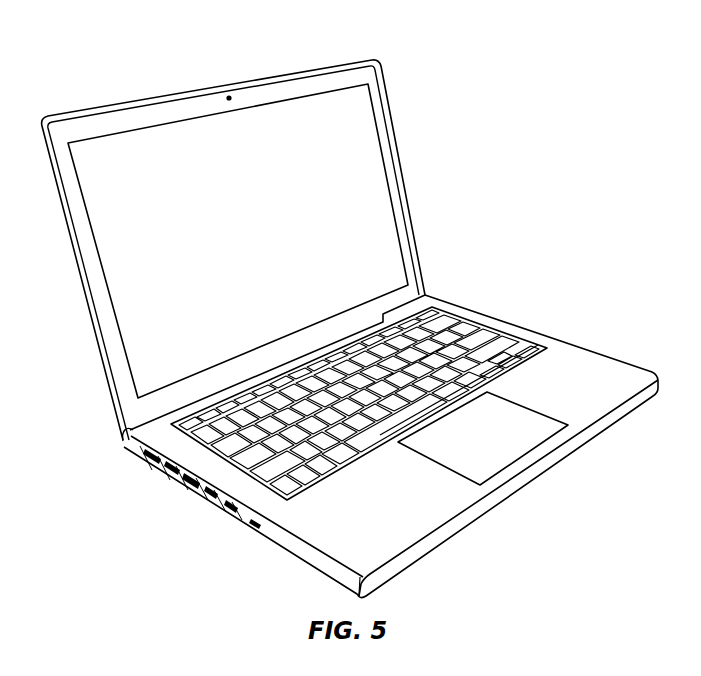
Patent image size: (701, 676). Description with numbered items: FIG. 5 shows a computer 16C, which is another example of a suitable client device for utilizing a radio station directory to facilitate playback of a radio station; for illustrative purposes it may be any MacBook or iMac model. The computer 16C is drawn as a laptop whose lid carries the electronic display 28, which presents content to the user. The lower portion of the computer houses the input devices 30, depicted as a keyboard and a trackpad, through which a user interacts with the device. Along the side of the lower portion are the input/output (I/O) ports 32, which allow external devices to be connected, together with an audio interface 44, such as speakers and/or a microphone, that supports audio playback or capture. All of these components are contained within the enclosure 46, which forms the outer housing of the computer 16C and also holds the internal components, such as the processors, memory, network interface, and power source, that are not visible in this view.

The computer 16C is at (83, 56).
The electronic display 28 is at (362, 153).
The input devices 30 is at (513, 333).
The input/output (I/O) ports 32 is at (184, 481).
The audio interface 44 is at (247, 527).
The enclosure 46 is at (607, 353).